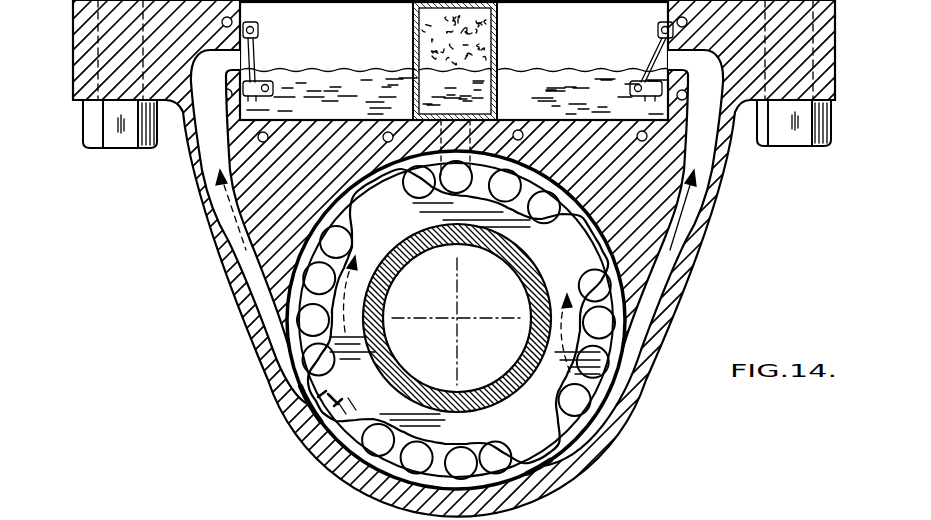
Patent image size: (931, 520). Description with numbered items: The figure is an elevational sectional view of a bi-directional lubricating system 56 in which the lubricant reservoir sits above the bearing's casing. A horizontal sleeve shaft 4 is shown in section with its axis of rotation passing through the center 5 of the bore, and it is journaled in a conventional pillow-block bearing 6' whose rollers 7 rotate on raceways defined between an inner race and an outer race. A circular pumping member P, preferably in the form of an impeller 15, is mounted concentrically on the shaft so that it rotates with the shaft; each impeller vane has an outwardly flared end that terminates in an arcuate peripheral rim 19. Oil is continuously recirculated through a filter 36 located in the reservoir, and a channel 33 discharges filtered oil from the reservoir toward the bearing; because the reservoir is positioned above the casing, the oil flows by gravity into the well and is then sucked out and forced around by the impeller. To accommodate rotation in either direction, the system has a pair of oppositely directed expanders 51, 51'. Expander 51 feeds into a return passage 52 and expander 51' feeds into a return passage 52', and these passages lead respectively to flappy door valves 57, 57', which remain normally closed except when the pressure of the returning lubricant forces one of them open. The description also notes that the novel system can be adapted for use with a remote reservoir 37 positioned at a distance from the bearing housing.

The sleeve shaft 4 is at (530, 284).
The center of bore 5 is at (456, 320).
The bearing 6' is at (635, 327).
The rollers 7 is at (362, 422).
The impeller 15 is at (575, 284).
The arcuate peripheral rim 19 is at (543, 469).
The channel 33 is at (447, 175).
The filter 36 is at (478, 46).
The remote reservoir 37 is at (375, 40).
The expander 51 is at (480, 320).
The expander 51' is at (282, 415).
The return passage 52 is at (636, 258).
The return passage 52' is at (250, 227).
The bi-directional lubricating system 56 is at (215, 240).
The flappy door valve 57 is at (638, 61).
The flappy door valve 57' is at (268, 57).
The pumping member P is at (337, 385).